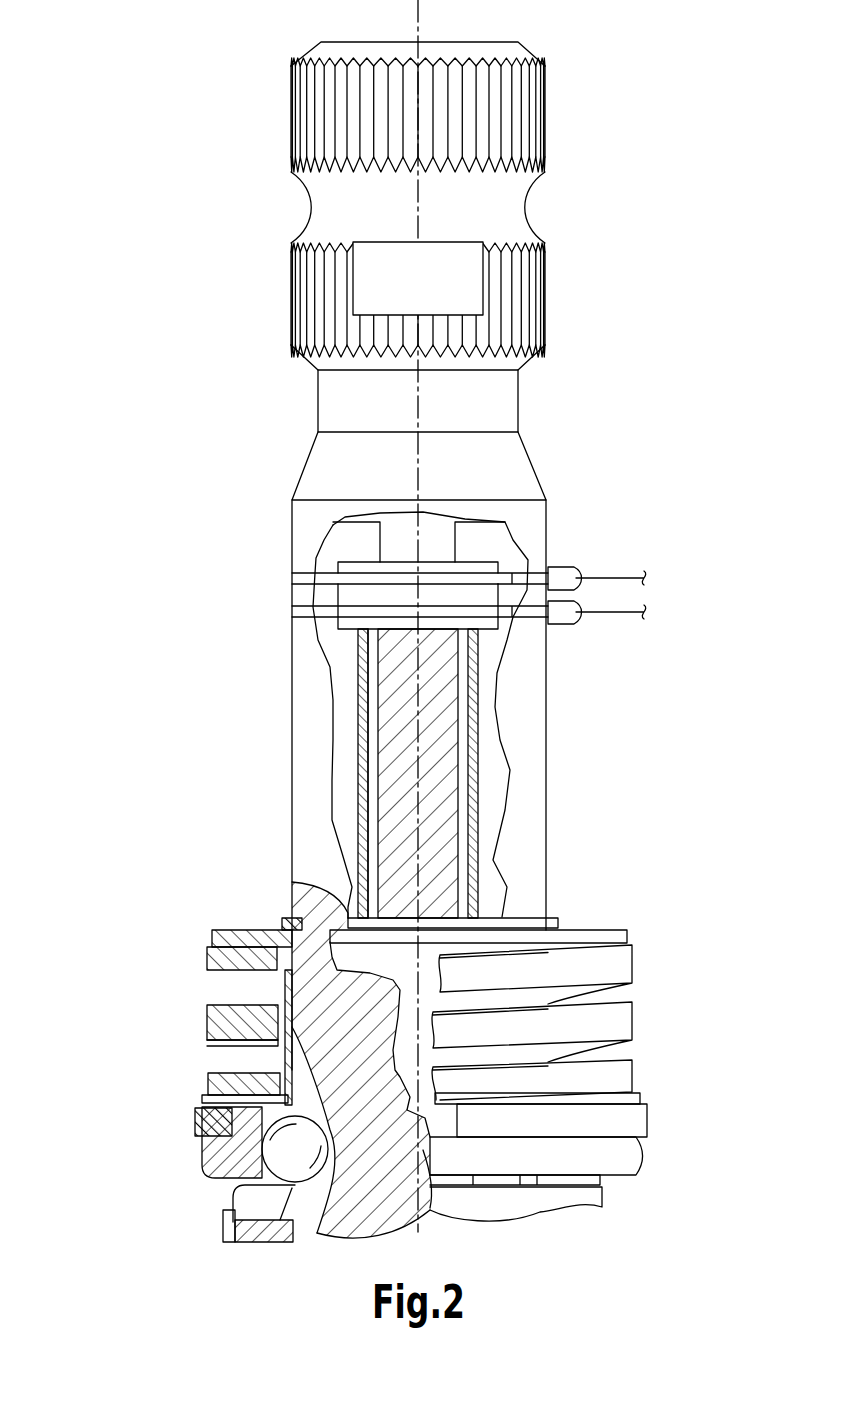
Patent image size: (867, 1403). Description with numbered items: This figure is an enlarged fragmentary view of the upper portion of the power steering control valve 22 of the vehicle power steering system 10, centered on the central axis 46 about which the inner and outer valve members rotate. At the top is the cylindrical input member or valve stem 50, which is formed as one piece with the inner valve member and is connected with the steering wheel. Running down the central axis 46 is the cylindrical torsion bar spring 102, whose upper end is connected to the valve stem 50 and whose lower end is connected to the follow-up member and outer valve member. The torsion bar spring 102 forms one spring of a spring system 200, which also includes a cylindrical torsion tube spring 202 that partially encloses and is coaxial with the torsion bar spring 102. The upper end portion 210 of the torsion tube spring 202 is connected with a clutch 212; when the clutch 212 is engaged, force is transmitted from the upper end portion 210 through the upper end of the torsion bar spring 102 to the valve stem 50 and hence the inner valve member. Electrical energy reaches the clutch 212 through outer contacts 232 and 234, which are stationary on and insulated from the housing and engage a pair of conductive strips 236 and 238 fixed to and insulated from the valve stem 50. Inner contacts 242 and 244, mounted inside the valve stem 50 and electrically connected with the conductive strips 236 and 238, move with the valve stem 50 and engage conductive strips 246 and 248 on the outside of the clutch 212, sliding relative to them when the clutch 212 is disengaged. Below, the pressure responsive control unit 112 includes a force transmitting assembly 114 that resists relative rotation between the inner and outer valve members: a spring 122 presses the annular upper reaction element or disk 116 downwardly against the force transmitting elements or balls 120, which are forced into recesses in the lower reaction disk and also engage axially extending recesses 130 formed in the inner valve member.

The vehicle power steering system 10 is at (113, 593).
The power steering control valve 22 is at (148, 679).
The central axis 46 is at (420, 18).
The input member or valve stem 50 is at (528, 215).
The torsion bar spring 102 is at (464, 809).
The pressure responsive control unit 112 is at (196, 1143).
The force transmitting assembly 114 is at (215, 1184).
The upper reaction element or disk 116 is at (625, 1157).
The force transmitting elements or balls 120 is at (298, 1096).
The spring 122 is at (625, 962).
The axially extending recesses 130 is at (290, 1132).
The spring system 200 is at (357, 778).
The torsion tube spring 202 is at (352, 812).
The upper end portion of the torsion tube spring 210 is at (480, 724).
The clutch 212 is at (403, 558).
The outer contact 232 is at (565, 565).
The outer contact 234 is at (568, 626).
The conductive strip 236 is at (300, 578).
The conductive strip 238 is at (291, 610).
The inner contact 242 is at (518, 570).
The inner contact 244 is at (522, 622).
The conductive strip 246 is at (362, 580).
The conductive strip 248 is at (338, 629).